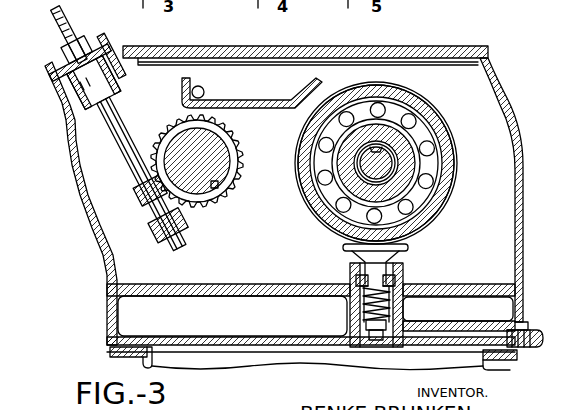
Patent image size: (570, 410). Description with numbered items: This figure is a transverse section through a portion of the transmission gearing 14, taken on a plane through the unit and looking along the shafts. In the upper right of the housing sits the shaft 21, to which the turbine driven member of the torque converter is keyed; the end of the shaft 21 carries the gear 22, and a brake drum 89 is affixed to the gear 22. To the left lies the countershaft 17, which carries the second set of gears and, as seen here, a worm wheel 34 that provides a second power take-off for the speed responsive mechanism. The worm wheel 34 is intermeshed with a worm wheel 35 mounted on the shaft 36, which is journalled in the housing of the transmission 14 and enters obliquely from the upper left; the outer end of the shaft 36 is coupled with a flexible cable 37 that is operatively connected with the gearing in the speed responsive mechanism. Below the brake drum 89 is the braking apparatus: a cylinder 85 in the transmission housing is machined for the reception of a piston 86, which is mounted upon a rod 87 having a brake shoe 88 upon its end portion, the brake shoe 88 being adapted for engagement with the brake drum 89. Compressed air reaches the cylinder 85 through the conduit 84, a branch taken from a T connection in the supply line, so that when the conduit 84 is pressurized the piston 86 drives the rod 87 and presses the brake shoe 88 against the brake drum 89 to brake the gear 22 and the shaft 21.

The transmission gearing 14 is at (62, 172).
The countershaft 17 is at (221, 142).
The shaft 21 is at (420, 93).
The gear 22 is at (413, 152).
The worm wheel 34 is at (240, 172).
The worm wheel 35 is at (143, 202).
The shaft 36 is at (115, 140).
The flexible cable 37 is at (53, 8).
The conduit 84 is at (537, 327).
The cylinder 85 is at (390, 312).
The piston 86 is at (397, 312).
The rod 87 is at (360, 322).
The brake shoe 88 is at (408, 250).
The brake drum 89 is at (452, 208).